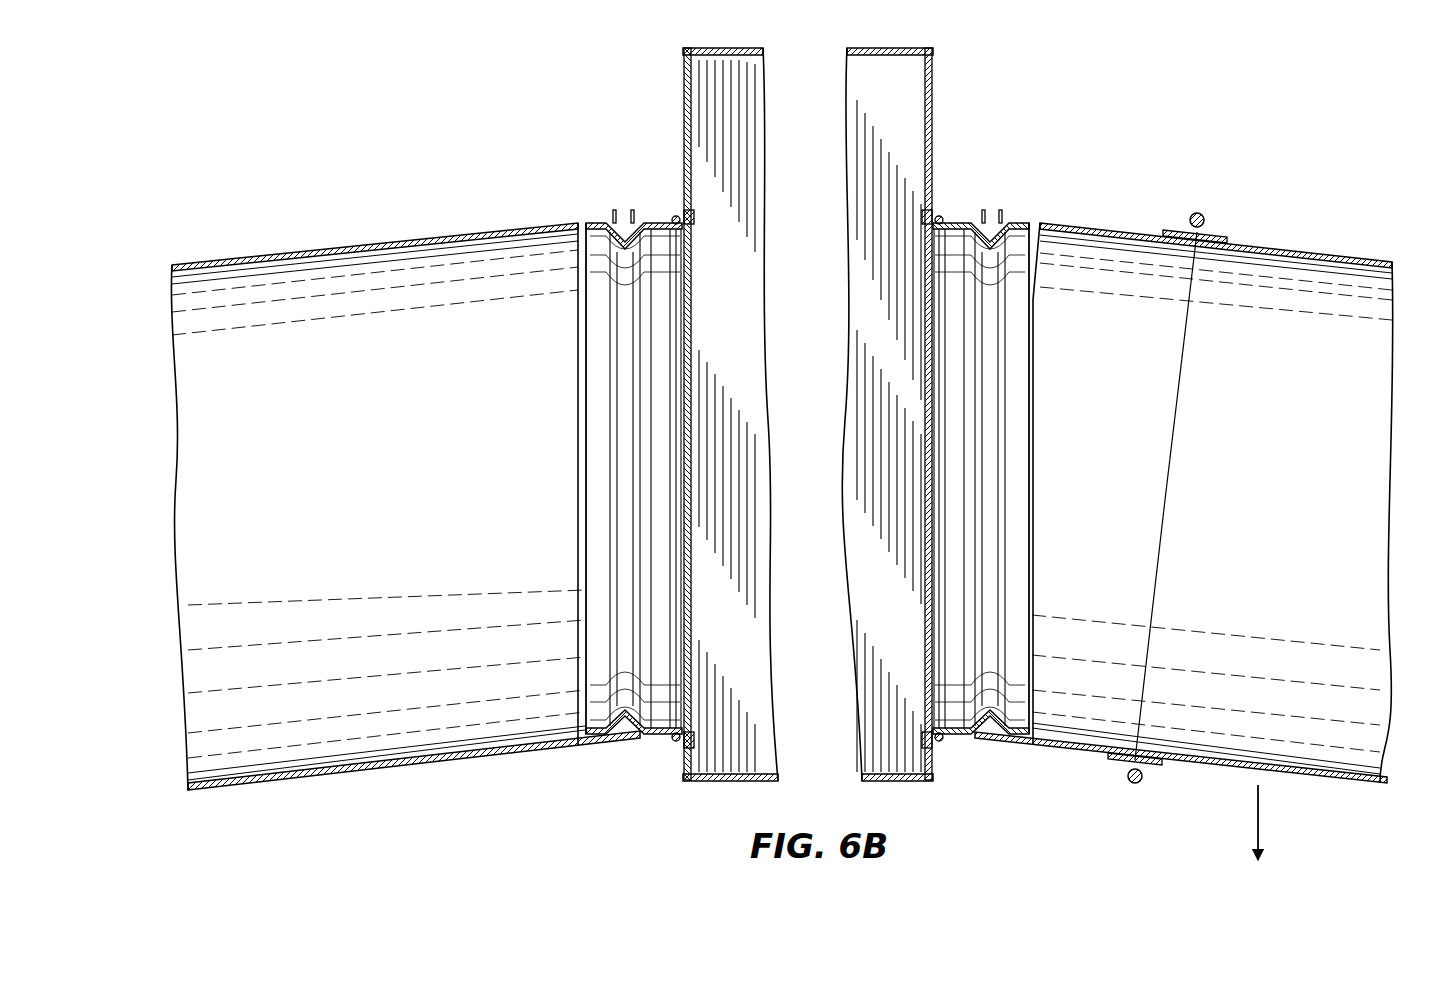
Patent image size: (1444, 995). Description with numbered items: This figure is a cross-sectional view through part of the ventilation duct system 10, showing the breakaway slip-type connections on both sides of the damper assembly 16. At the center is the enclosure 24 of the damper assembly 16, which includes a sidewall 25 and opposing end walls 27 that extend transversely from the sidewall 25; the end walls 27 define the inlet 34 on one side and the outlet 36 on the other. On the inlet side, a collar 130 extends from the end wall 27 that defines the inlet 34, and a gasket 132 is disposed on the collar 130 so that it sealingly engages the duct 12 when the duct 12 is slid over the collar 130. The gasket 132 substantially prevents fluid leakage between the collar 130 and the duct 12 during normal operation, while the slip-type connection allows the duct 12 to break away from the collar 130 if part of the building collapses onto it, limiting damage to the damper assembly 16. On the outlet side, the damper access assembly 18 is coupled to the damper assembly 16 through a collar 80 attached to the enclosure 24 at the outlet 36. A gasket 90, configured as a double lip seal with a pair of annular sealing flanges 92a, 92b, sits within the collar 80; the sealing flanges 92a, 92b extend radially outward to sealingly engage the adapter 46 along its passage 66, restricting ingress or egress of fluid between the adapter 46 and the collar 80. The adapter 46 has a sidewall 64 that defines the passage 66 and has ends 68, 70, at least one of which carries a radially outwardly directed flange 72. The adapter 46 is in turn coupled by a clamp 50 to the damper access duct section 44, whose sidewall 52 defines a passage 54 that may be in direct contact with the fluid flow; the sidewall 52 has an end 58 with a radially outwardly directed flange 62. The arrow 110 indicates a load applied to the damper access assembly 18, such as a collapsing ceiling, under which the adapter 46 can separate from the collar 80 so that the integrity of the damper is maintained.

The ventilation duct system 10 is at (1364, 165).
The ventilation duct run 12 is at (330, 263).
The damper assembly 16 is at (939, 65).
The damper access assembly 18 is at (1357, 257).
The enclosure 24 is at (934, 103).
The sidewall 25 is at (730, 783).
The end wall 27 is at (683, 85).
The inlet 34 is at (694, 562).
The outlet 36 is at (924, 520).
The damper access duct section 44 is at (1262, 247).
The adapter 46 is at (1125, 232).
The clamp 50 is at (1195, 215).
The sidewall 52 is at (1302, 252).
The passage 54 is at (1359, 493).
The end 58 is at (1156, 536).
The radially outwardly directed flange 62 is at (1146, 778).
The sidewall 64 is at (1072, 228).
The passage 66 is at (1096, 471).
The end 68 is at (1176, 410).
The end 70 is at (1040, 222).
The radially outwardly directed flange 72 is at (1120, 765).
The collar 80 is at (941, 744).
The gasket 90 is at (993, 207).
The annular sealing flange 92a is at (982, 212).
The annular sealing flange 92b is at (1002, 212).
The arrow 110 is at (1260, 812).
The collar 130 is at (674, 744).
The gasket 132 is at (627, 210).